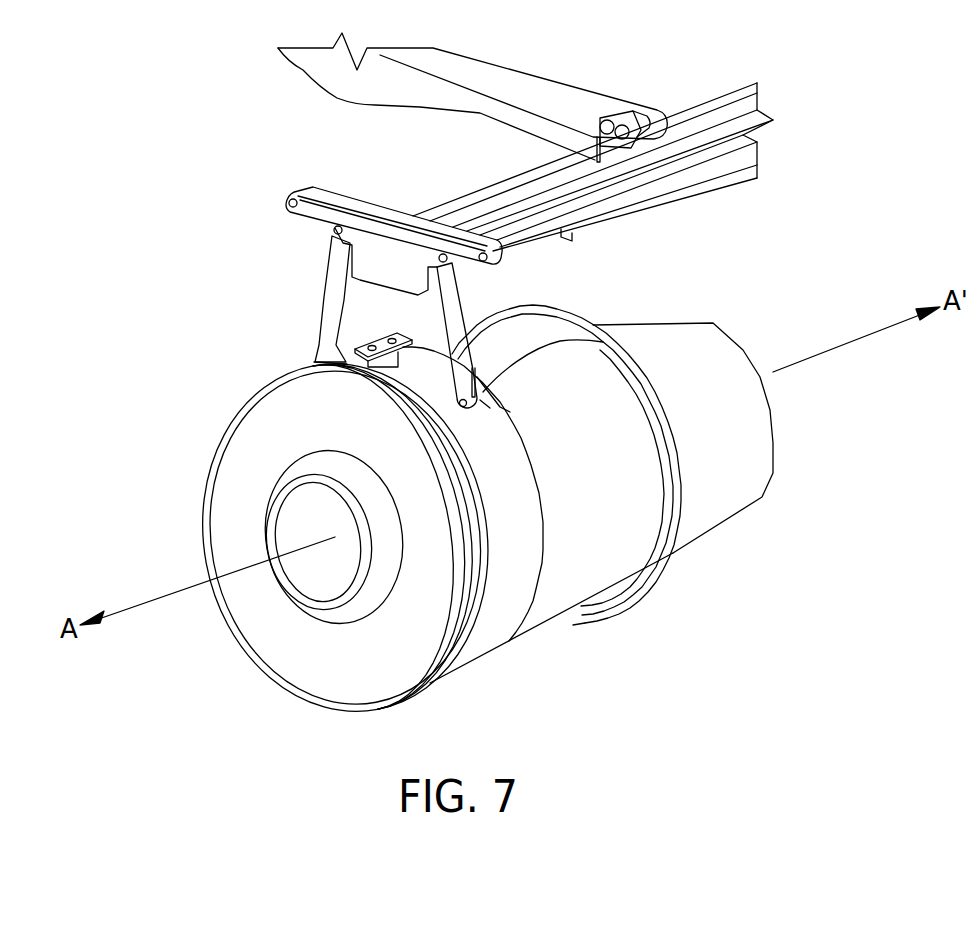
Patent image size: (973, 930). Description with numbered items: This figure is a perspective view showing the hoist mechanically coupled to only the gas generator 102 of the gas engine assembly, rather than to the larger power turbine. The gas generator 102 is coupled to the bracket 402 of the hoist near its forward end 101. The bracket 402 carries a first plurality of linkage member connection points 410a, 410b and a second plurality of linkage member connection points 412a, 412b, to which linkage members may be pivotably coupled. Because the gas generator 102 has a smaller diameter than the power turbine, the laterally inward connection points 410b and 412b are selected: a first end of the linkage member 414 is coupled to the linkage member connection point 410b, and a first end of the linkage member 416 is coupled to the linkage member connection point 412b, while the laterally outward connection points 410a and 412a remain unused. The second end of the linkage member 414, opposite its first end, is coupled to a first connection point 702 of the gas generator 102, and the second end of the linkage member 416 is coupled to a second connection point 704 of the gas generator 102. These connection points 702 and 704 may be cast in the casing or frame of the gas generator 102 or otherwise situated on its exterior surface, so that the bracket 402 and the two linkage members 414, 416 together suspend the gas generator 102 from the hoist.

The forward end 101 is at (485, 653).
The gas generator 102 is at (603, 625).
The bracket 402 is at (323, 185).
The linkage member connection point 410a is at (289, 203).
The linkage member connection point 410b is at (340, 226).
The linkage member connection point 412a is at (481, 253).
The linkage member connection point 412b is at (409, 213).
The linkage member 414 is at (327, 281).
The linkage member 416 is at (497, 277).
The first connection point 702 is at (313, 350).
The second connection point 704 is at (603, 342).